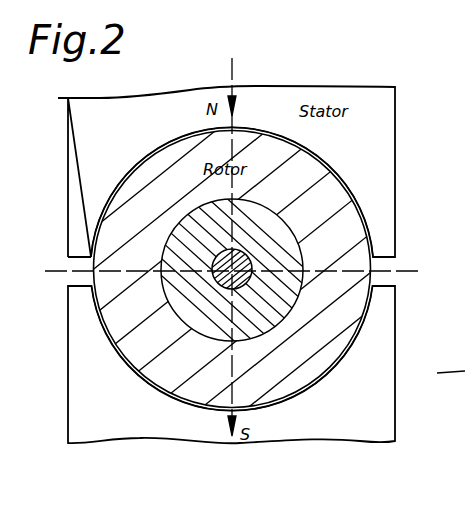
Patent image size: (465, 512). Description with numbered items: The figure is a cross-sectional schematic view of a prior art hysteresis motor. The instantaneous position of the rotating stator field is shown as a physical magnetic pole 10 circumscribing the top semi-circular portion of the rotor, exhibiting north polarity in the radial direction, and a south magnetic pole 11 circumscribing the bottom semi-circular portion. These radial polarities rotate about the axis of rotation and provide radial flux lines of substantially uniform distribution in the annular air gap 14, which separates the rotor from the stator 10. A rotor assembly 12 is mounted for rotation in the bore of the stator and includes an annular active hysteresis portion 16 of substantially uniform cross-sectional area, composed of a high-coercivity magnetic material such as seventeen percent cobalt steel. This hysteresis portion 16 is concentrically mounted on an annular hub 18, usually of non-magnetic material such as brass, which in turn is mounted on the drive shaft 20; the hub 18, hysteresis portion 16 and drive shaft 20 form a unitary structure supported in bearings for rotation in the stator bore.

The stator pole 10 is at (362, 154).
The south magnetic pole 11 is at (371, 364).
The rotor assembly 12 is at (94, 277).
The annular air gap 14 is at (371, 241).
The annular active hysteresis portion 16 is at (295, 366).
The annular hub 18 is at (168, 288).
The drive shaft 20 is at (247, 283).